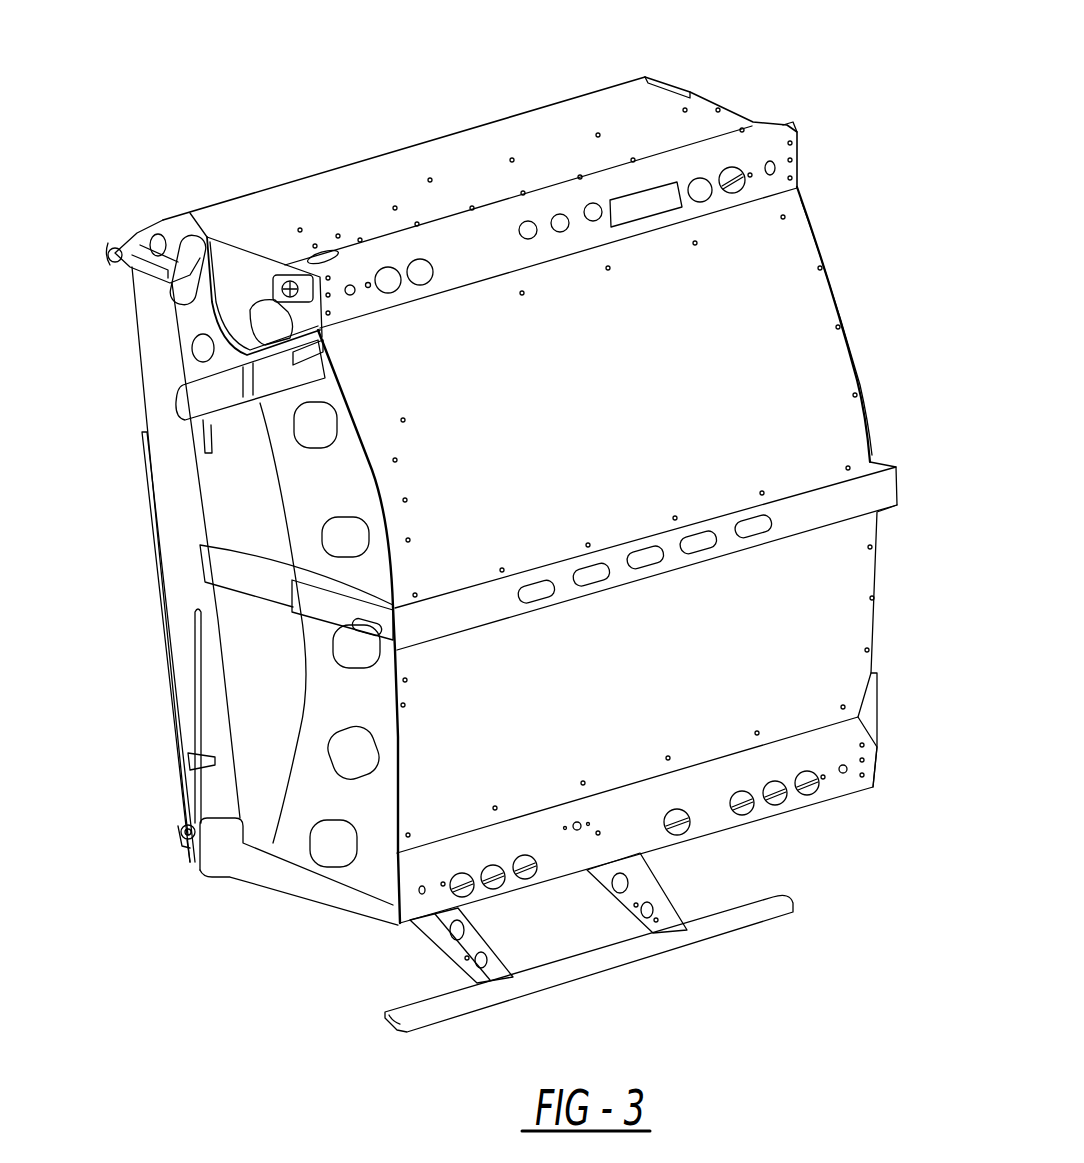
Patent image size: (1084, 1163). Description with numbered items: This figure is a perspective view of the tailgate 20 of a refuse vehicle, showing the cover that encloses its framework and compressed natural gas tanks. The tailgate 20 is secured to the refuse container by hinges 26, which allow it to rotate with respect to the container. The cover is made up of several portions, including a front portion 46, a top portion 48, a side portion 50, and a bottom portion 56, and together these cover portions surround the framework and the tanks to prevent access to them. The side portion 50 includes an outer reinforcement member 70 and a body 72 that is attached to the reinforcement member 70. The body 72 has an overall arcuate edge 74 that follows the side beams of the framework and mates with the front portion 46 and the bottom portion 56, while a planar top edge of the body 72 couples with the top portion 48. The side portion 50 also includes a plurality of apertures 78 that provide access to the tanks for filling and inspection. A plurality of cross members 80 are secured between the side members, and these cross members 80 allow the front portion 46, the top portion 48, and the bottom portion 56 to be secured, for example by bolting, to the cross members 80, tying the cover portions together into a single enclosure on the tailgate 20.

The tailgate 20 is at (847, 100).
The hinges 26 is at (128, 264).
The front portion 46 is at (752, 393).
The top portion 48 is at (658, 103).
The side portion 50 is at (250, 514).
The bottom portion 56 is at (778, 640).
The outer reinforcement member 70 is at (177, 573).
The body 72 is at (285, 683).
The arcuate edge 74 is at (375, 502).
The apertures 78 is at (347, 763).
The cross members 80 is at (842, 305).